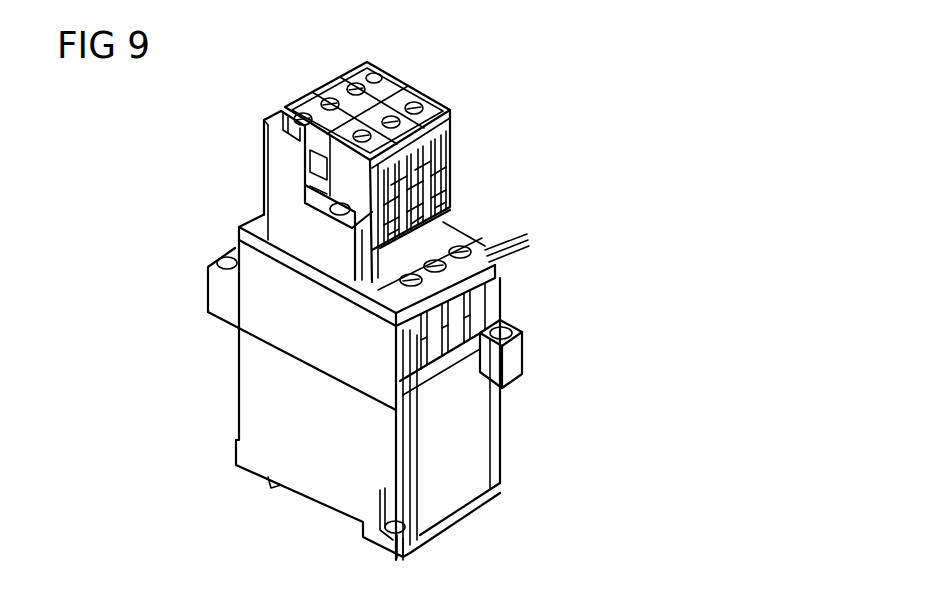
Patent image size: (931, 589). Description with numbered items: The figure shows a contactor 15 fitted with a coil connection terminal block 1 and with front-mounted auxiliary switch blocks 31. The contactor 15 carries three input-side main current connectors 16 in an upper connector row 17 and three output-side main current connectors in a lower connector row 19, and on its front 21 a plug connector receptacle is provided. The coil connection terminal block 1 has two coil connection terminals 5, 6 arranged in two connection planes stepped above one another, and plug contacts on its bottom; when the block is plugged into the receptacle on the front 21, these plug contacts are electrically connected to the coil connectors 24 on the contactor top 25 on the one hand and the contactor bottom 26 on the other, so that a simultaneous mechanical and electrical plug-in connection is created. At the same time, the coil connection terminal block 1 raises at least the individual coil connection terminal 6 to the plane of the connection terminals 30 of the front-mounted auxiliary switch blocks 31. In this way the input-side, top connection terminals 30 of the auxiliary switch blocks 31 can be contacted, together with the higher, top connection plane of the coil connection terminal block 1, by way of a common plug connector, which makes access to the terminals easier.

The coil connection terminal block 1 is at (283, 173).
The coil connection terminal 5 is at (348, 252).
The coil connection terminal 6 is at (305, 147).
The contactor 15 is at (556, 168).
The input-side main current connectors 16 is at (513, 250).
The upper connector row 17 is at (253, 223).
The lower connector row 19 is at (468, 236).
The front 21 is at (458, 212).
The coil connectors 24 is at (220, 293).
The contactor top 25 is at (240, 395).
The contactor bottom 26 is at (450, 447).
The connection terminals 30 is at (356, 66).
The auxiliary switch blocks 31 is at (335, 100).